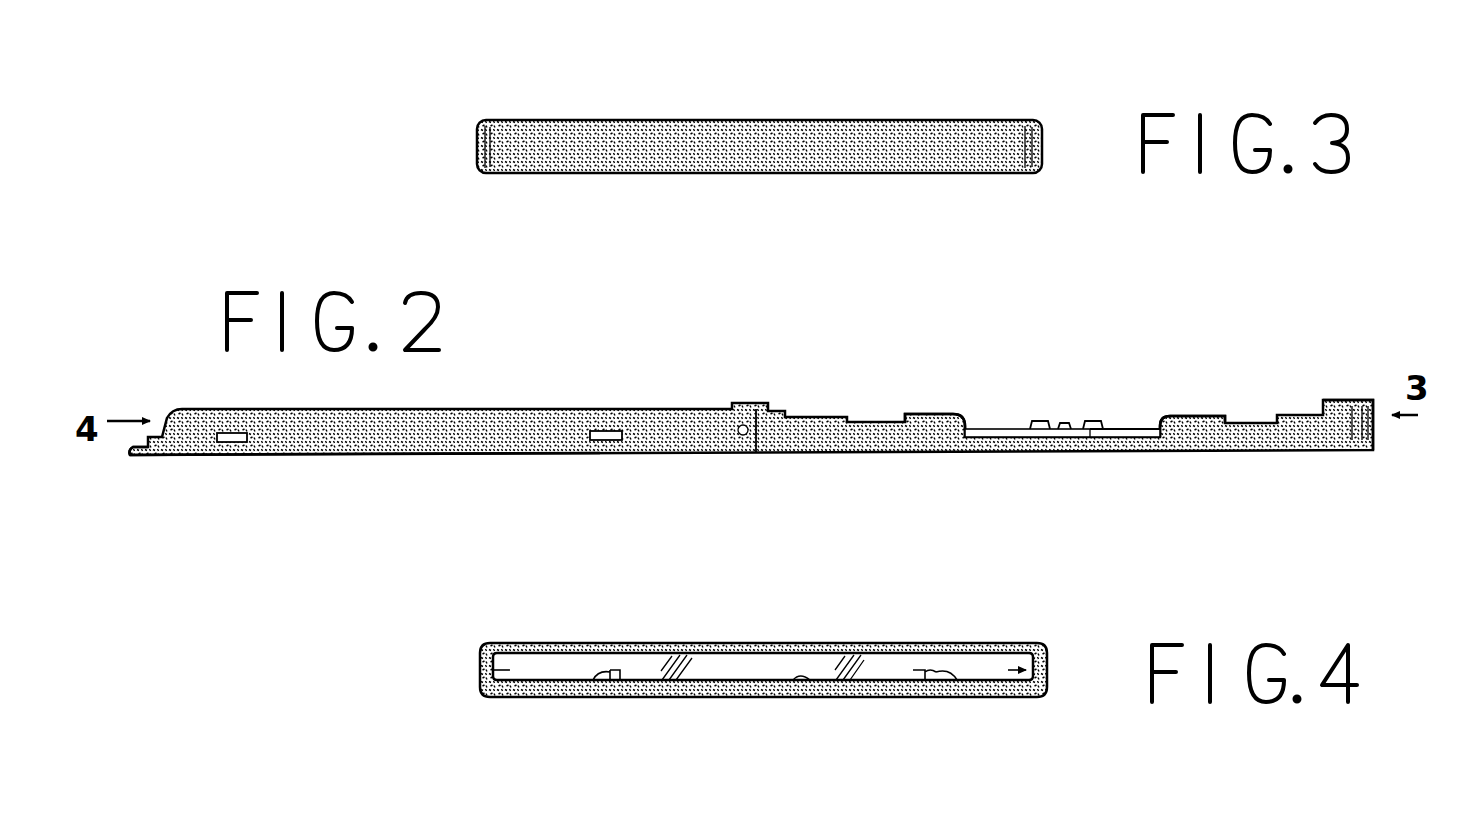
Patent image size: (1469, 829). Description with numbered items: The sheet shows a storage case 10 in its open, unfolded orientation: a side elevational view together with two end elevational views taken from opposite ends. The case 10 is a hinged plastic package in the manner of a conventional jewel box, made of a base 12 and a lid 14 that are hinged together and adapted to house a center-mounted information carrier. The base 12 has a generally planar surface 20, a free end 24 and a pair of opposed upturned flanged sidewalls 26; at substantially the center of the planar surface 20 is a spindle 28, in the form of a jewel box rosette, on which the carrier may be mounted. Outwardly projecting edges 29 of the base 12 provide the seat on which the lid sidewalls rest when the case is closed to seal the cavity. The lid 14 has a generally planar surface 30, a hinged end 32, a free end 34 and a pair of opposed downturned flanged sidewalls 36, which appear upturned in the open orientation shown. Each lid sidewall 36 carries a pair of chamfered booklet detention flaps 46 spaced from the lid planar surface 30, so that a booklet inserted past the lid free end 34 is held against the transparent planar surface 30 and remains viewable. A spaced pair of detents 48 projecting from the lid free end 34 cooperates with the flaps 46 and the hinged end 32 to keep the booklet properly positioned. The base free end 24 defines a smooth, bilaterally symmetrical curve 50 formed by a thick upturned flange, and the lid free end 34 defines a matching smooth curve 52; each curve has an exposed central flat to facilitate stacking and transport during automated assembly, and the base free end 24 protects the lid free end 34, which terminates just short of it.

In FIG. 3, the storage case 10 is at (725, 134).
In FIG. 2, the storage case 10 is at (745, 430).
In FIG. 4, the storage case 10 is at (715, 677).
In FIG. 2, the base 12 is at (932, 390).
In FIG. 2, the lid 14 is at (751, 386).
In FIG. 2, the base planar surface 20 is at (1130, 432).
In FIG. 3, the base free end 24 is at (759, 171).
In FIG. 2, the base free end 24 is at (1321, 456).
In FIG. 2, the base sidewalls 26 is at (910, 428).
In FIG. 2, the spindle 28 is at (1078, 425).
In FIG. 2, the outwardly projecting edges 29 is at (1040, 445).
In FIG. 4, the lid planar surface 30 is at (811, 680).
In FIG. 4, the lid hinged end 32 is at (727, 645).
In FIG. 2, the lid free end 34 is at (130, 449).
In FIG. 4, the lid free end 34 is at (763, 723).
In FIG. 2, the lid sidewalls 36 is at (458, 434).
In FIG. 4, the booklet detention flaps 46 is at (500, 668).
In FIG. 2, the detents 48 is at (160, 435).
In FIG. 4, the detents 48 is at (595, 680).
In FIG. 3, the base free end curve 50 is at (730, 152).
In FIG. 2, the base free end curve 50 is at (1376, 437).
In FIG. 2, the lid free end curve 52 is at (140, 454).
In FIG. 4, the lid free end curve 52 is at (671, 697).